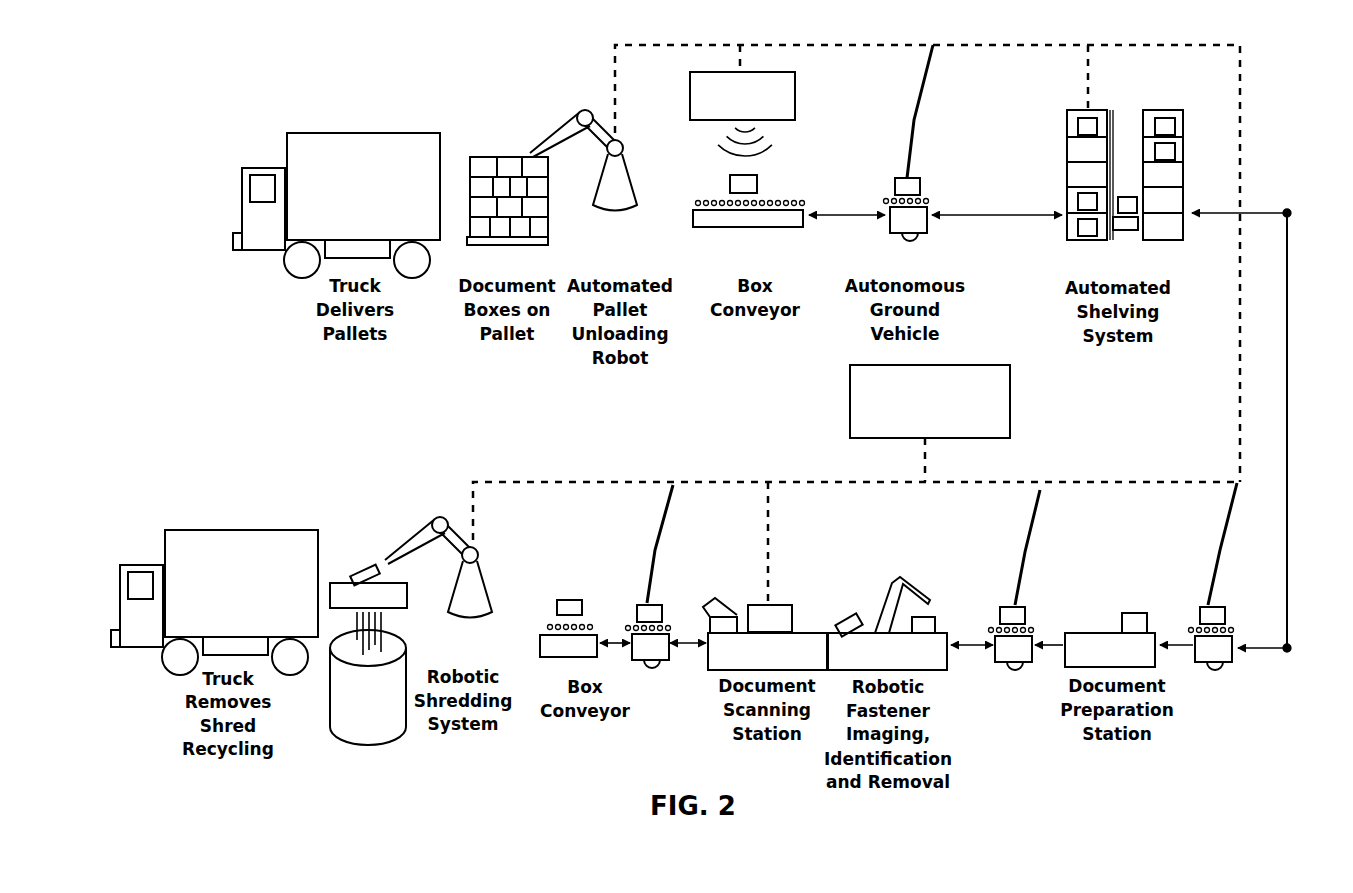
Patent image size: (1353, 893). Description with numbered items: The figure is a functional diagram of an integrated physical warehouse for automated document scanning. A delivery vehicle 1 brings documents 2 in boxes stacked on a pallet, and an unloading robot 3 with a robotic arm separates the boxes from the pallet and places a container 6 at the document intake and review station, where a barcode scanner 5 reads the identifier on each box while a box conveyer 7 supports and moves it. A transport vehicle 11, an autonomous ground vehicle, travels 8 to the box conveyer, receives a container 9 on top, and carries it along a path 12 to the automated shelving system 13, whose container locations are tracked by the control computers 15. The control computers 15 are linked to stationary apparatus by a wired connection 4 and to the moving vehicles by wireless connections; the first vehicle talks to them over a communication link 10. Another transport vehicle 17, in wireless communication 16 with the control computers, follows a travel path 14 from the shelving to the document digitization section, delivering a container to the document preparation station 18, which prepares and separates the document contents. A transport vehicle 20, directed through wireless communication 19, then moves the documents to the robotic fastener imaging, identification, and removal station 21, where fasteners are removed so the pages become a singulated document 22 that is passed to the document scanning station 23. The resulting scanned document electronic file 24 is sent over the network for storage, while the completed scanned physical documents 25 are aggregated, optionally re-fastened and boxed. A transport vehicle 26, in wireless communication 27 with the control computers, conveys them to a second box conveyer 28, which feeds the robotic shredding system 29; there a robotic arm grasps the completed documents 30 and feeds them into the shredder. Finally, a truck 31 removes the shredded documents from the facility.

The delivery vehicle 1 is at (378, 131).
The documents 2 is at (487, 155).
The unloading robot 3 is at (568, 107).
The wired connection 4 is at (647, 43).
The barcode scanner 5 is at (795, 77).
The container 6 is at (758, 185).
The box conveyer 7 is at (778, 230).
The travel 8 is at (837, 219).
The container 9 is at (921, 187).
The communication link 10 is at (915, 121).
The transport vehicle 11 is at (926, 232).
The path 12 is at (983, 216).
The automated shelving system 13 is at (1143, 110).
The travel path 14 is at (1287, 353).
The control computers 15 is at (1010, 413).
The wireless communication 16 is at (1217, 540).
The transport vehicle 17 is at (1222, 670).
The document preparation station 18 is at (1138, 613).
The wireless communication 19 is at (1027, 540).
The transport vehicle 20 is at (1010, 668).
The robotic fastener imaging, identification, and removal station 21 is at (913, 567).
The singulated document 22 is at (840, 613).
The document scanning station 23 is at (787, 603).
The scanned document electronic file 24 is at (770, 503).
The completed scanned physical documents 25 is at (712, 600).
The transport vehicle 26 is at (658, 663).
The wireless communication 27 is at (647, 573).
The box conveyer 28 is at (572, 598).
The robotic shredding system 29 is at (462, 520).
The completed documents 30 is at (363, 568).
The truck 31 is at (255, 528).